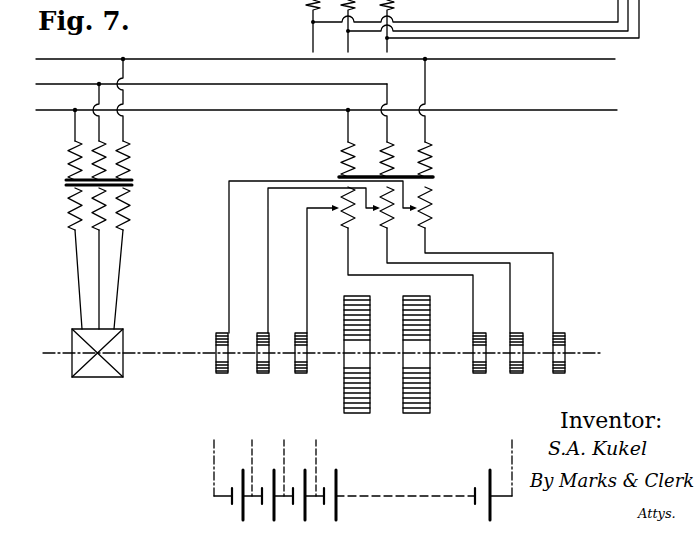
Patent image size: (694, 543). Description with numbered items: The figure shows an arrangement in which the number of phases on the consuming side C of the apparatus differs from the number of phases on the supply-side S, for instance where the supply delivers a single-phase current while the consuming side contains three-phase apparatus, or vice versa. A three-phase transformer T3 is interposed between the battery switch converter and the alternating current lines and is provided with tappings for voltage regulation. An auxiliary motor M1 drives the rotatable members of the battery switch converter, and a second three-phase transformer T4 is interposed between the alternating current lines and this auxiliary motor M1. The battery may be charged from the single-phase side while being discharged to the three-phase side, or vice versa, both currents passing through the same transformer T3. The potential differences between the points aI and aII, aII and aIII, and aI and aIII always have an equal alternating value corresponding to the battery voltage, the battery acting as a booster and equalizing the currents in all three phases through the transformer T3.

The consuming side C is at (325, 50).
The supply-side S is at (326, 124).
The point aI is at (351, 115).
The point aII is at (400, 108).
The point aIII is at (437, 99).
The three-phase transformer T3 is at (402, 185).
The three-phase transformer T4 is at (113, 185).
The auxiliary motor M1 is at (111, 357).